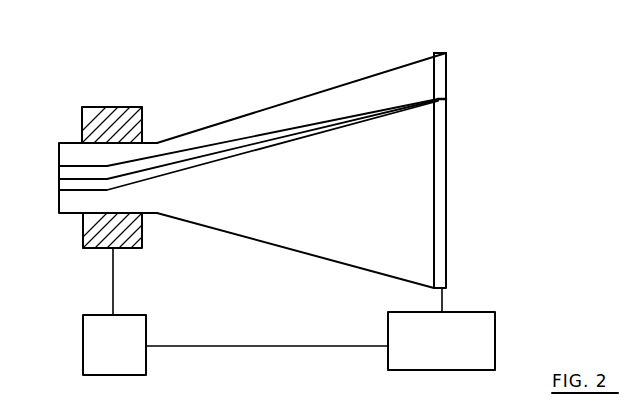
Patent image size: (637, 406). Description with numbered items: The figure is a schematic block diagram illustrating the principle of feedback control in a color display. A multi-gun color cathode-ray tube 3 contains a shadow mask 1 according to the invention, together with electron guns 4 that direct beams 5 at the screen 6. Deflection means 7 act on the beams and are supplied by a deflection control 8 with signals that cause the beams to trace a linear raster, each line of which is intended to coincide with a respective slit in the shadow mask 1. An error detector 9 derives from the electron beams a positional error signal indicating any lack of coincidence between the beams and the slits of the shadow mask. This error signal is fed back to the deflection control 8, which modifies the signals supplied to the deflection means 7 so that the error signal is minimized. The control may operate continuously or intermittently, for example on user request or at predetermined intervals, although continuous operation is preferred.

The shadow mask 1 is at (434, 170).
The multi-gun color cathode-ray tube 3 is at (233, 117).
The electron guns 4 is at (70, 164).
The beams 5 is at (213, 163).
The screen 6 is at (446, 217).
The deflection means 7 is at (118, 107).
The deflection control 8 is at (120, 358).
The error detector 9 is at (447, 352).